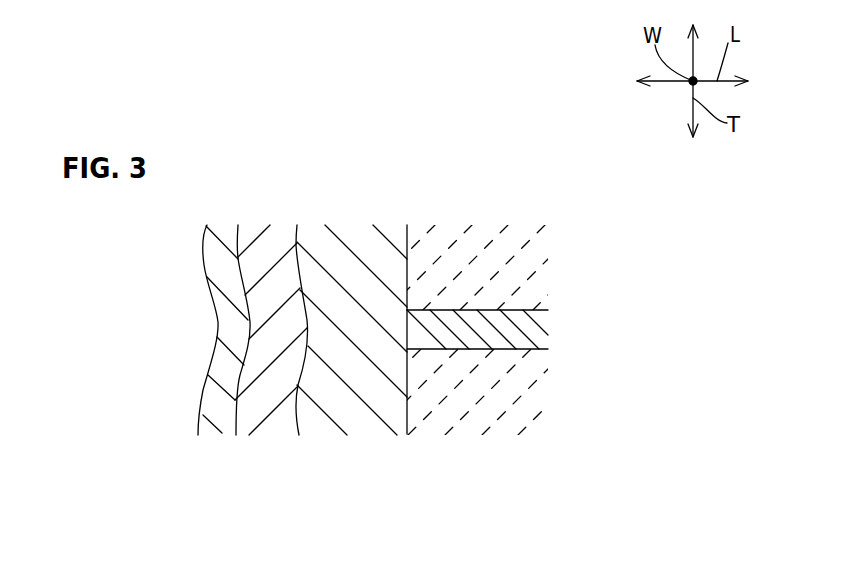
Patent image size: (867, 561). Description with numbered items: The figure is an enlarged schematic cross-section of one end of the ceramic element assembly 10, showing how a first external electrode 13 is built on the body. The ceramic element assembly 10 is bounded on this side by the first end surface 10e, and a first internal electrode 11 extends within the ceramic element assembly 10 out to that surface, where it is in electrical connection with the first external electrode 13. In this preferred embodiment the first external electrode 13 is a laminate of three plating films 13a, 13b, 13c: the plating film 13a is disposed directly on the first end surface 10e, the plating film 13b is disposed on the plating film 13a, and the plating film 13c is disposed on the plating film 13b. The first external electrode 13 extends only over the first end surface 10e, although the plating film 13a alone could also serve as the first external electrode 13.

The ceramic element assembly 10 is at (404, 430).
The first end surface 10e is at (407, 402).
The first internal electrode 11 is at (513, 309).
The first external electrode 13 is at (65, 243).
The plating film 13a is at (298, 280).
The plating film 13b is at (248, 322).
The plating film 13c is at (210, 354).